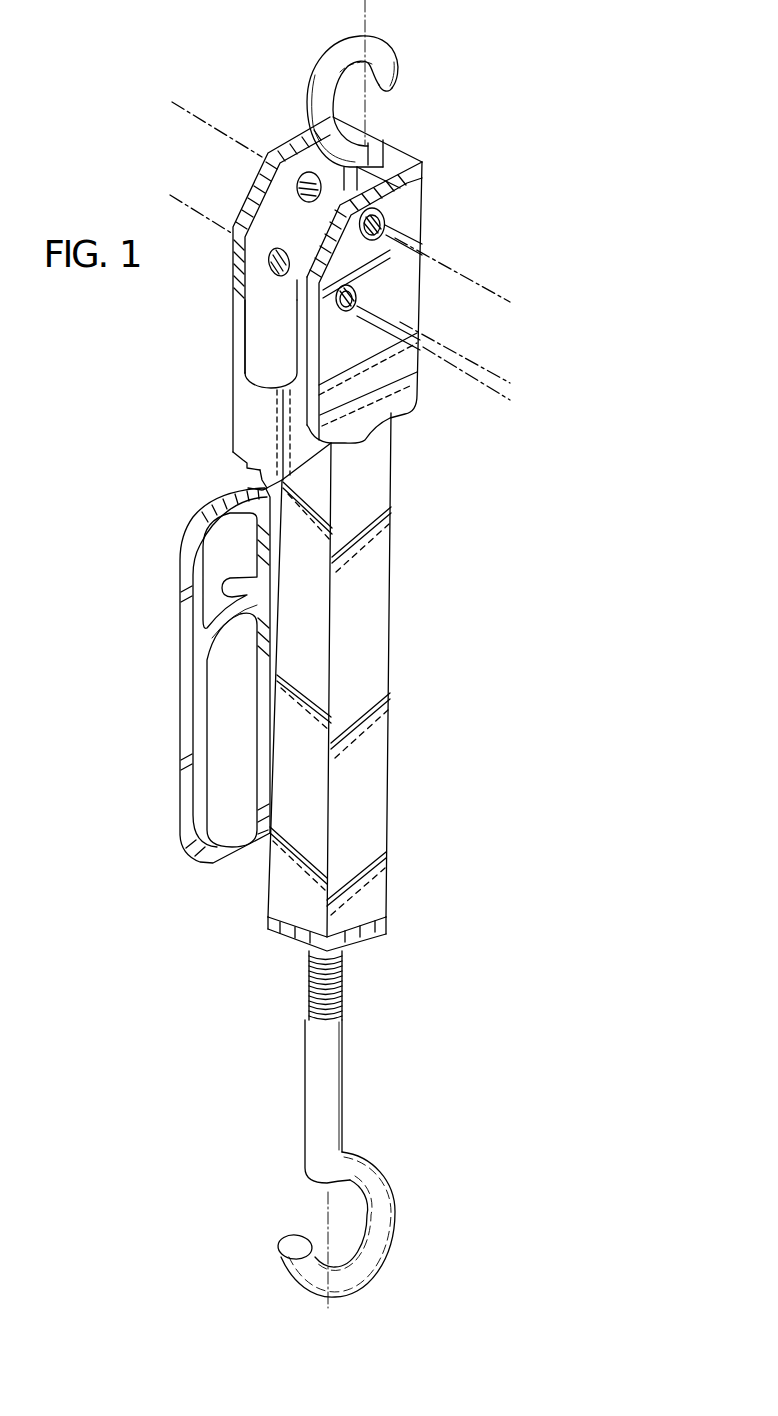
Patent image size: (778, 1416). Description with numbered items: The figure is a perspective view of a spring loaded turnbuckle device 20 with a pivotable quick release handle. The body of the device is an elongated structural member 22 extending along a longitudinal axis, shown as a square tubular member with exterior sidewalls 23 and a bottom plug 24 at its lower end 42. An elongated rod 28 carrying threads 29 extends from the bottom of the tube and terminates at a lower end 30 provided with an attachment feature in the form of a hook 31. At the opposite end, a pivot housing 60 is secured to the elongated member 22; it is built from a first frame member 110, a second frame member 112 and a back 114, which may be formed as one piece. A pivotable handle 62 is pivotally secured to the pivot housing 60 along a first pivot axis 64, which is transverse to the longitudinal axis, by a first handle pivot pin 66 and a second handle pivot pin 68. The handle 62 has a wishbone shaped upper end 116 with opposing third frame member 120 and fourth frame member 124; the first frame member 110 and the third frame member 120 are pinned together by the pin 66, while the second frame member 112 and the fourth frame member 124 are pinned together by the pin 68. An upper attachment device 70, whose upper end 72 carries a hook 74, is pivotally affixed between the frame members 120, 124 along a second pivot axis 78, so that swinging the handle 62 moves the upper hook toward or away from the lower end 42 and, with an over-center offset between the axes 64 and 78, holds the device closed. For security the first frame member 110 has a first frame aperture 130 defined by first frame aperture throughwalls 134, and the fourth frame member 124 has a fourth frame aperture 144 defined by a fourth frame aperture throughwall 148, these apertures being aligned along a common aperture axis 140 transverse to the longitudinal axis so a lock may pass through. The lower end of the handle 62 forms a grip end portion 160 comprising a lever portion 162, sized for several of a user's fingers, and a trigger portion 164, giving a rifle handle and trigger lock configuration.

The spring loaded turnbuckle device 20 is at (468, 236).
The elongated structural member 22 is at (393, 600).
The exterior sidewalls 23 is at (374, 667).
The bottom plug 24 is at (287, 947).
The elongated rod 28 is at (343, 1118).
The threads 29 is at (345, 993).
The lower end 30 is at (355, 1282).
The hook 31 is at (368, 1235).
The lower end of elongated member 42 is at (392, 917).
The pivot housing 60 is at (423, 317).
The pivotable handle 62 is at (262, 488).
The first pivot axis 64 is at (487, 293).
The first handle pivot pin 66 is at (388, 217).
The second handle pivot pin 68 is at (299, 185).
The upper attachment device 70 is at (306, 110).
The upper end 72 is at (378, 38).
The hook 74 is at (347, 92).
The second pivot axis 78 is at (452, 350).
The first frame member 110 is at (303, 398).
The second frame member 112 is at (233, 330).
The back 114 is at (406, 150).
The wishbone shaped upper end 116 is at (258, 440).
The third frame member 120 is at (297, 343).
The fourth frame member 124 is at (244, 313).
The first frame aperture 130 is at (342, 312).
The first frame aperture throughwalls 134 is at (352, 288).
The common aperture axis 140 is at (480, 388).
The fourth frame aperture 144 is at (269, 255).
The fourth frame aperture throughwall 148 is at (290, 290).
The grip end portion 160 is at (117, 555).
The lever portion 162 is at (168, 680).
The trigger portion 164 is at (165, 517).